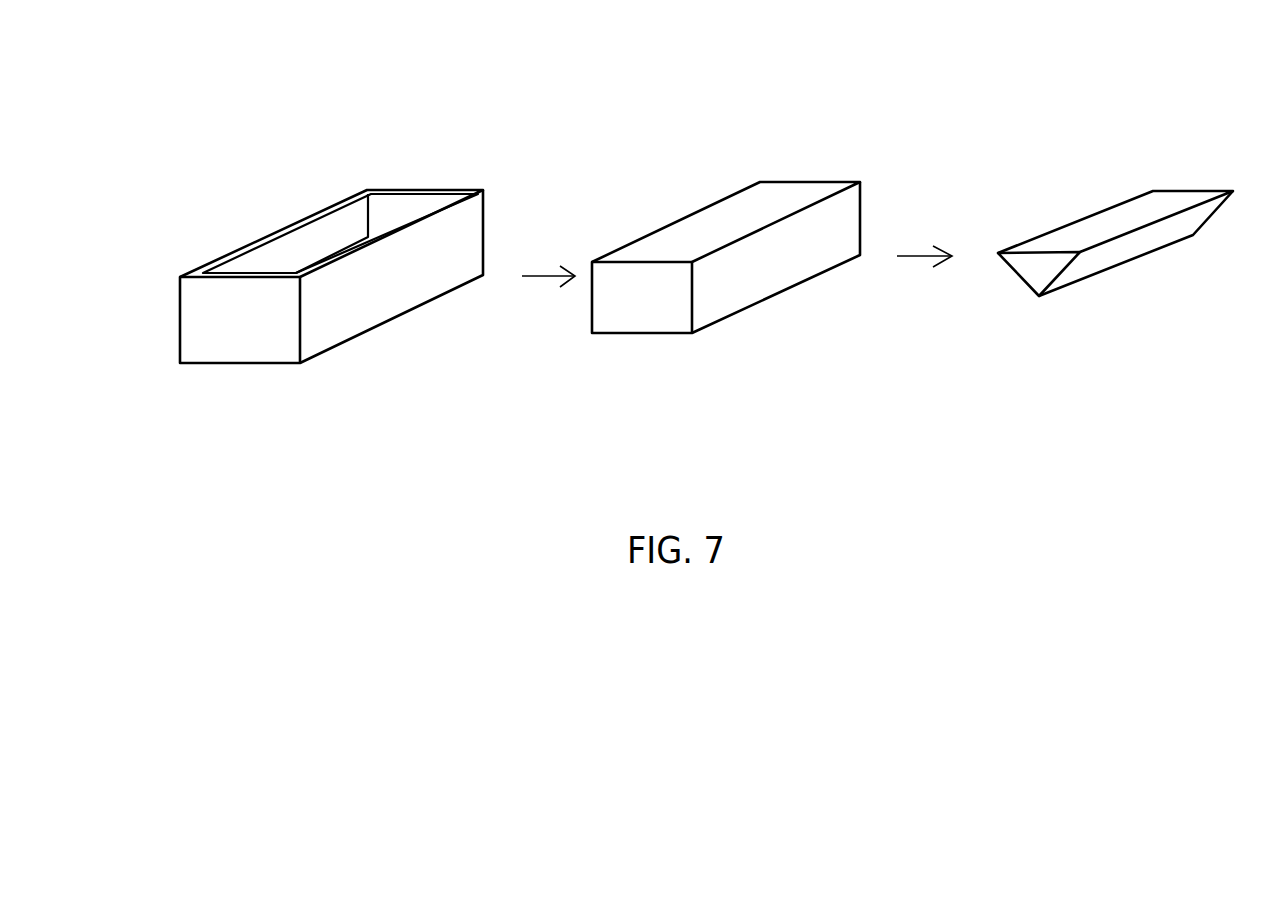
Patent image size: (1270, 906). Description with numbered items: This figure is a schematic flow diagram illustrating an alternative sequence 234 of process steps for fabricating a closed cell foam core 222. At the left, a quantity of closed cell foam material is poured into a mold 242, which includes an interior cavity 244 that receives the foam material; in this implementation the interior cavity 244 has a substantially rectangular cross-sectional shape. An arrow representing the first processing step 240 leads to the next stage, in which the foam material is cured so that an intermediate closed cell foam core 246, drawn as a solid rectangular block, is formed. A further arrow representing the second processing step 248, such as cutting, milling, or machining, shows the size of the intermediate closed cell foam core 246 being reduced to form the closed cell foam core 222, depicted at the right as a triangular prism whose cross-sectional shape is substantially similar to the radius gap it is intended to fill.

The alternative sequence 234 is at (213, 102).
The mold 242 is at (197, 333).
The interior cavity 244 is at (305, 243).
The first processing step 240 is at (550, 267).
The intermediate closed cell foam core 246 is at (773, 190).
The second processing step 248 is at (927, 247).
The closed cell foam core 222 is at (1163, 202).